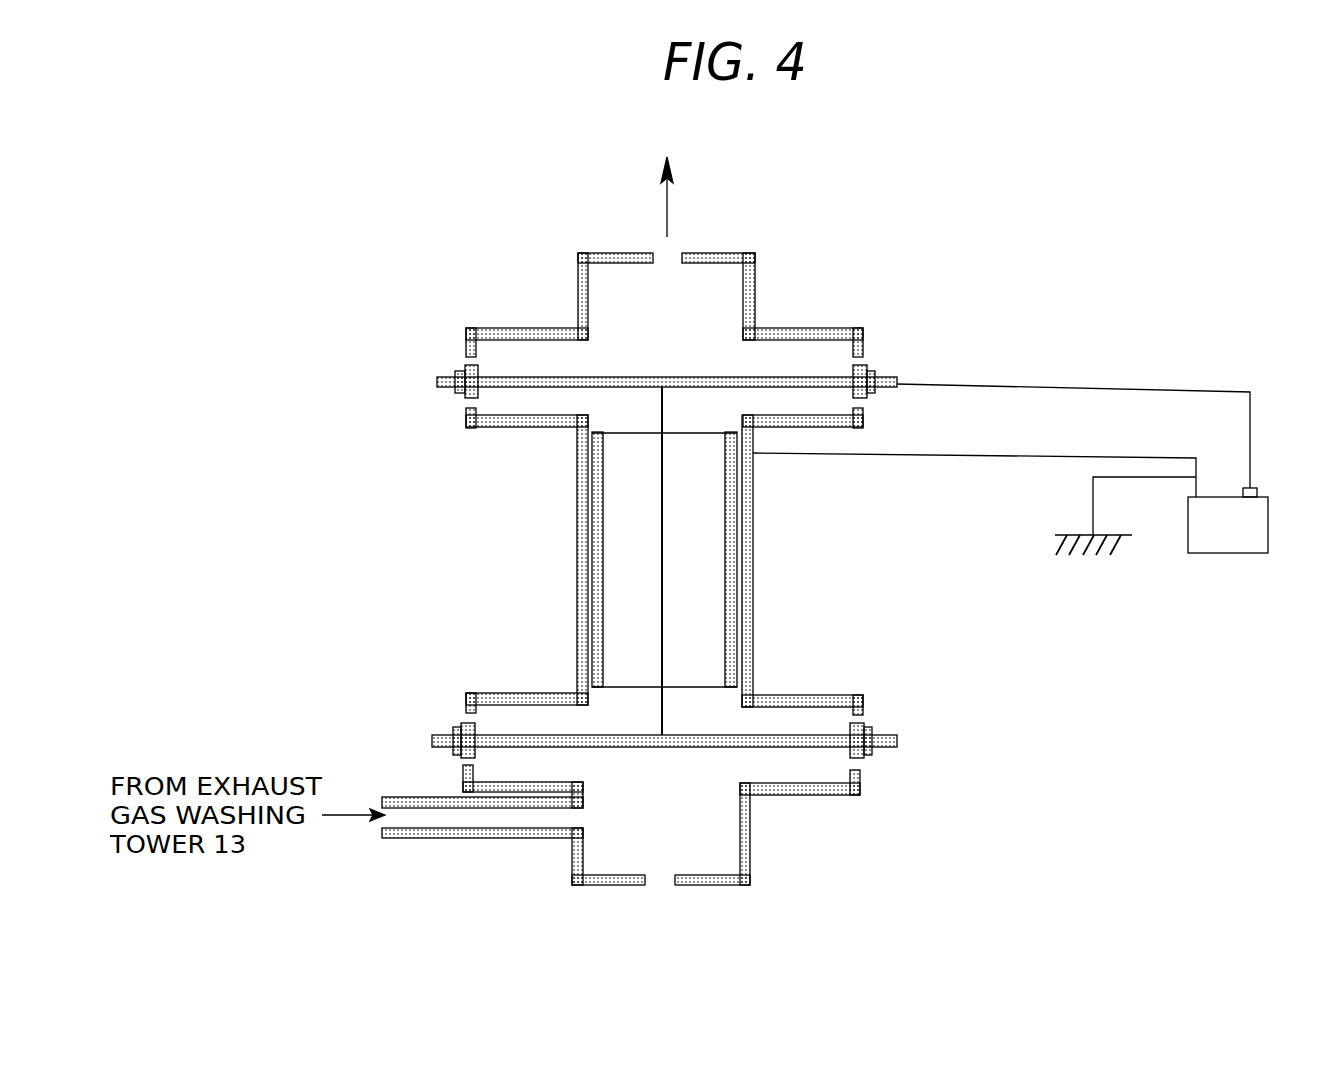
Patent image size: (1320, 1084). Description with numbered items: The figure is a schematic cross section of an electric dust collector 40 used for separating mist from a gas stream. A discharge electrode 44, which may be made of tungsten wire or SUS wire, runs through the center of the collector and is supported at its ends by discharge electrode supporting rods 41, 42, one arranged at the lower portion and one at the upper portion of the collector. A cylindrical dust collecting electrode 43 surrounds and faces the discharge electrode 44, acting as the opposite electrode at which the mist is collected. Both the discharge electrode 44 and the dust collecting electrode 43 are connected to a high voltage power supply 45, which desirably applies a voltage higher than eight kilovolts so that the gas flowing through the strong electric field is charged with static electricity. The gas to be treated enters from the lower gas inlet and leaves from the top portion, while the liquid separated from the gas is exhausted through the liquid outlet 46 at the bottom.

The electric dust collector 40 is at (577, 598).
The discharge electrode supporting rod 41 is at (788, 747).
The discharge electrode supporting rod 42 is at (806, 377).
The cylindrical dust collecting electrode 43 is at (753, 560).
The discharge electrode 44 is at (659, 558).
The high voltage power supply 45 is at (1238, 553).
The liquid outlet 46 is at (658, 880).